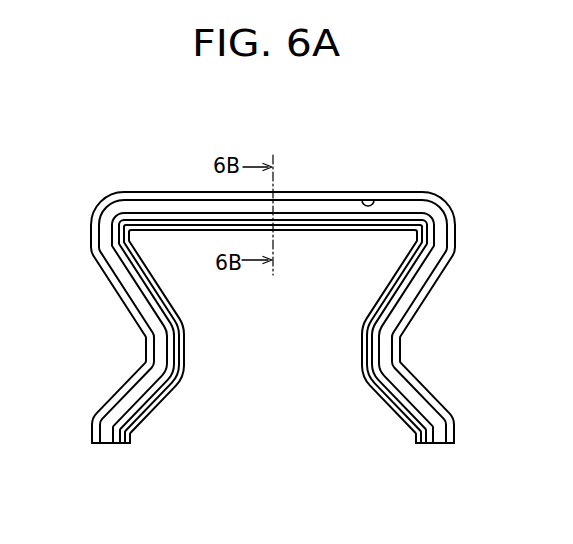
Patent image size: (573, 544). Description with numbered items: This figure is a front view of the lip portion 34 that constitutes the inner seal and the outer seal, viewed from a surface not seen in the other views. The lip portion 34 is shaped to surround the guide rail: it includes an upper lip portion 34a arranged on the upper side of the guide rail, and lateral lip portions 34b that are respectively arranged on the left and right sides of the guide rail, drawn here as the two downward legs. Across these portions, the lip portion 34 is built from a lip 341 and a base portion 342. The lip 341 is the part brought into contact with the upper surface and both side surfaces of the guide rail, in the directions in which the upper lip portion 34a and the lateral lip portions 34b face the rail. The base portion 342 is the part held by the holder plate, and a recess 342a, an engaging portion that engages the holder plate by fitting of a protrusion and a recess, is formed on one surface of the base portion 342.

The lip portion 34 is at (103, 180).
The upper lip portion 34a is at (163, 194).
The lateral lip portions 34b is at (133, 300).
The lip 341 is at (190, 233).
The base portion 342 is at (188, 192).
The recess 342a is at (375, 200).